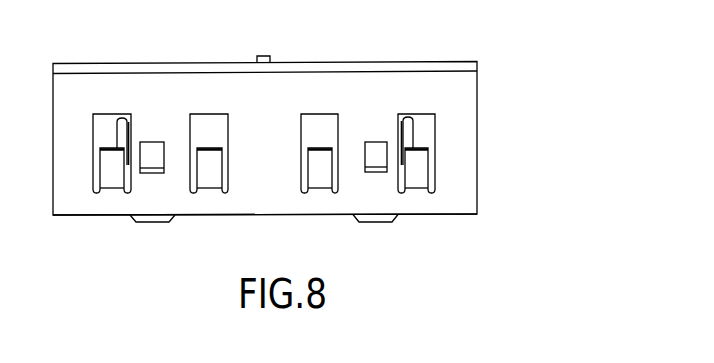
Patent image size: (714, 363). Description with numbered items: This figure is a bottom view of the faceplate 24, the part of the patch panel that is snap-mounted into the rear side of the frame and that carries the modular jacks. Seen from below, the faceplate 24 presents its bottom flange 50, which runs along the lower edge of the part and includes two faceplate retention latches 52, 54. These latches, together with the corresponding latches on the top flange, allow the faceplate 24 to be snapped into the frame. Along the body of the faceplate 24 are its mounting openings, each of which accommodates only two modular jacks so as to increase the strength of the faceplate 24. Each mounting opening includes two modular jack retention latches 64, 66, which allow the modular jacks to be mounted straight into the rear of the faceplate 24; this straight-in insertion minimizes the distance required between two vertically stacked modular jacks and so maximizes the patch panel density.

The faceplate 24 is at (477, 143).
The bottom flange 50 is at (320, 205).
The faceplate retention latch 52 is at (153, 147).
The faceplate retention latch 54 is at (377, 147).
The modular jack retention latch 64 is at (112, 167).
The modular jack retention latch 66 is at (210, 168).